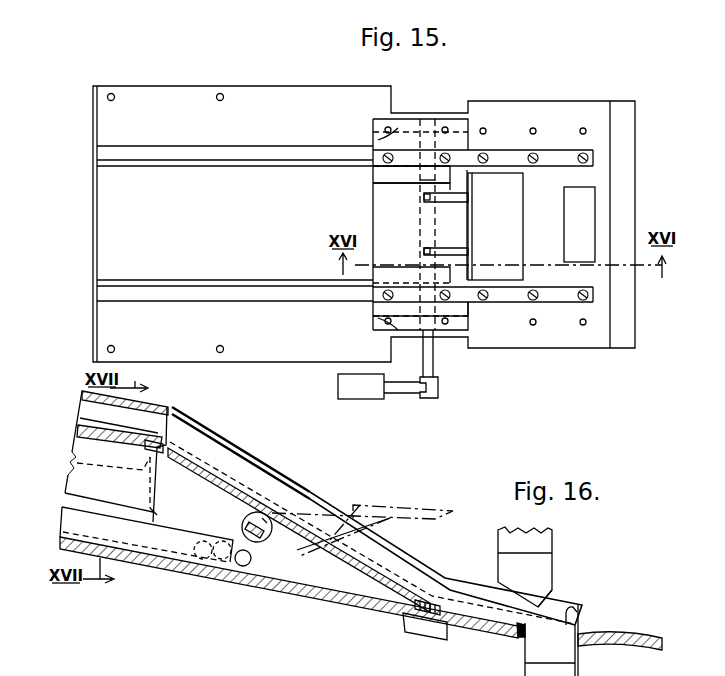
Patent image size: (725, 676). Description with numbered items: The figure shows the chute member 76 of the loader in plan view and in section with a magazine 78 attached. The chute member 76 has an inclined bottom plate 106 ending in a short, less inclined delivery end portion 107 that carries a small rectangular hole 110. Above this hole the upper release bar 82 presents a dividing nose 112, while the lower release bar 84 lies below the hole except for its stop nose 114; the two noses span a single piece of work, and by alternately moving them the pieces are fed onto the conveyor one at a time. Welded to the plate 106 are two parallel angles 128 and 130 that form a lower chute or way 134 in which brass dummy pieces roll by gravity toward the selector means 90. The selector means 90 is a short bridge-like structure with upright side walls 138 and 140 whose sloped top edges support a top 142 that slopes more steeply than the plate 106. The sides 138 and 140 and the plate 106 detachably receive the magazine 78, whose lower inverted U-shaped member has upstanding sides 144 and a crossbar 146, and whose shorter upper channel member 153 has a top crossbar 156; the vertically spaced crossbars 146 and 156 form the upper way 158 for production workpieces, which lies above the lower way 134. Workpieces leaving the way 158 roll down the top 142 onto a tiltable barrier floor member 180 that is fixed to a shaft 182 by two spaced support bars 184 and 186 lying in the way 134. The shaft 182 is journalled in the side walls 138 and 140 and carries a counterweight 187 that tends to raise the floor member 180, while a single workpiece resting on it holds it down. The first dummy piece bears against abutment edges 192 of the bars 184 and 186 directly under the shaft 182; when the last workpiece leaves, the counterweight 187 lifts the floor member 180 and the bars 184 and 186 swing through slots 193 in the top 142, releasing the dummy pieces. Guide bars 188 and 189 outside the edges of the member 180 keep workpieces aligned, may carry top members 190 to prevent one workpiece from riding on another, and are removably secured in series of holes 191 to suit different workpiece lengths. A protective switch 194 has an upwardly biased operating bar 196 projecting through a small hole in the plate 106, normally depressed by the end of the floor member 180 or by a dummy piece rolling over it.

In FIG. 16, the chute member 76 is at (205, 581).
In FIG. 16, the magazine 78 is at (49, 441).
In FIG. 16, the upper release bar 82 is at (546, 567).
In FIG. 16, the lower release bar 84 is at (579, 655).
In FIG. 16, the selector means 90 is at (309, 462).
In FIG. 15, the bottom plate 106 is at (345, 86).
In FIG. 16, the bottom plate 106 is at (183, 580).
In FIG. 16, the delivery end portion 107 is at (650, 637).
In FIG. 15, the rectangular hole 110 is at (566, 218).
In FIG. 16, the rectangular hole 110 is at (521, 634).
In FIG. 16, the dividing nose 112 is at (548, 594).
In FIG. 16, the stop nose 114 is at (578, 613).
In FIG. 15, the angle 128 is at (232, 166).
In FIG. 15, the angle 130 is at (275, 281).
In FIG. 16, the angle 130 is at (178, 533).
In FIG. 16, the way 134 is at (62, 521).
In FIG. 15, the side wall 138 is at (373, 124).
In FIG. 16, the side wall 138 is at (148, 512).
In FIG. 15, the side wall 140 is at (373, 324).
In FIG. 15, the top 142 is at (373, 213).
In FIG. 16, the top 142 is at (206, 470).
In FIG. 16, the side 144 is at (72, 485).
In FIG. 16, the crossbar 146 is at (145, 447).
In FIG. 16, the upper channel member 153 is at (323, 669).
In FIG. 16, the top crossbar 156 is at (400, 669).
In FIG. 16, the way 158 is at (82, 408).
In FIG. 15, the tiltable barrier floor member 180 is at (524, 206).
In FIG. 16, the tiltable barrier floor member 180 is at (393, 550).
In FIG. 15, the shaft 182 is at (434, 358).
In FIG. 16, the shaft 182 is at (213, 506).
In FIG. 15, the support bar 184 is at (471, 192).
In FIG. 15, the support bar 186 is at (473, 250).
In FIG. 16, the support bar 186 is at (300, 572).
In FIG. 15, the counterweight 187 is at (340, 388).
In FIG. 15, the guide bar 188 is at (517, 303).
In FIG. 15, the guide bar 189 is at (501, 152).
In FIG. 16, the guide bar 189 is at (318, 503).
In FIG. 15, the top member 190 is at (415, 188).
In FIG. 16, the top member 190 is at (268, 466).
In FIG. 15, the holes 191 is at (482, 128).
In FIG. 16, the abutment edge 192 is at (257, 578).
In FIG. 15, the slot 193 is at (422, 240).
In FIG. 16, the protective switch 194 is at (448, 634).
In FIG. 16, the operating bar 196 is at (413, 609).